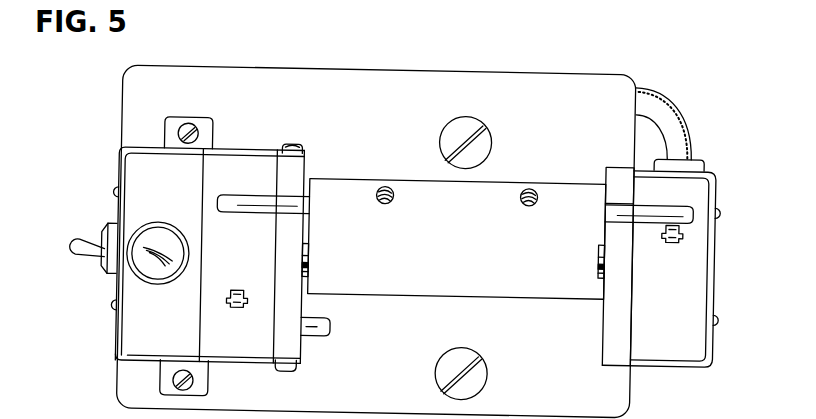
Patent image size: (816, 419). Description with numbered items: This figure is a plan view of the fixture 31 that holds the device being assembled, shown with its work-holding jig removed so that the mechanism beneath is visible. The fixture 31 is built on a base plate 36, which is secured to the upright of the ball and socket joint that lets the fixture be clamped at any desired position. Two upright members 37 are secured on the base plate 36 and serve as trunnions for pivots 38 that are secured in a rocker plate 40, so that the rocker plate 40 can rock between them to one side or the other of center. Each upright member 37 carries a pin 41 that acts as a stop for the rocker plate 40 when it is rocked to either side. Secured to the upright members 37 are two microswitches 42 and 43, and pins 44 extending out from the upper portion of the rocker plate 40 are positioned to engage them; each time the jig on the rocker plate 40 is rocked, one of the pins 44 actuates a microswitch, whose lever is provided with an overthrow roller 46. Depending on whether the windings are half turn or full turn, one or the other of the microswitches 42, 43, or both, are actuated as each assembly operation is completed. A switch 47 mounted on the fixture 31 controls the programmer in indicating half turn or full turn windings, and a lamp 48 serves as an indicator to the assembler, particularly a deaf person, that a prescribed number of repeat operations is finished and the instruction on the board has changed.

The fixture 31 is at (398, 370).
The base plate 36 is at (445, 69).
The upright members 37 is at (289, 257).
The pivots 38 is at (310, 246).
The rocker plate 40 is at (414, 180).
The pin 41 is at (337, 321).
The microswitch 42 is at (257, 160).
The microswitch 43 is at (690, 342).
The pins 44 is at (253, 200).
The overthrow roller 46 is at (243, 306).
The switch 47 is at (86, 258).
The lamp 48 is at (168, 232).